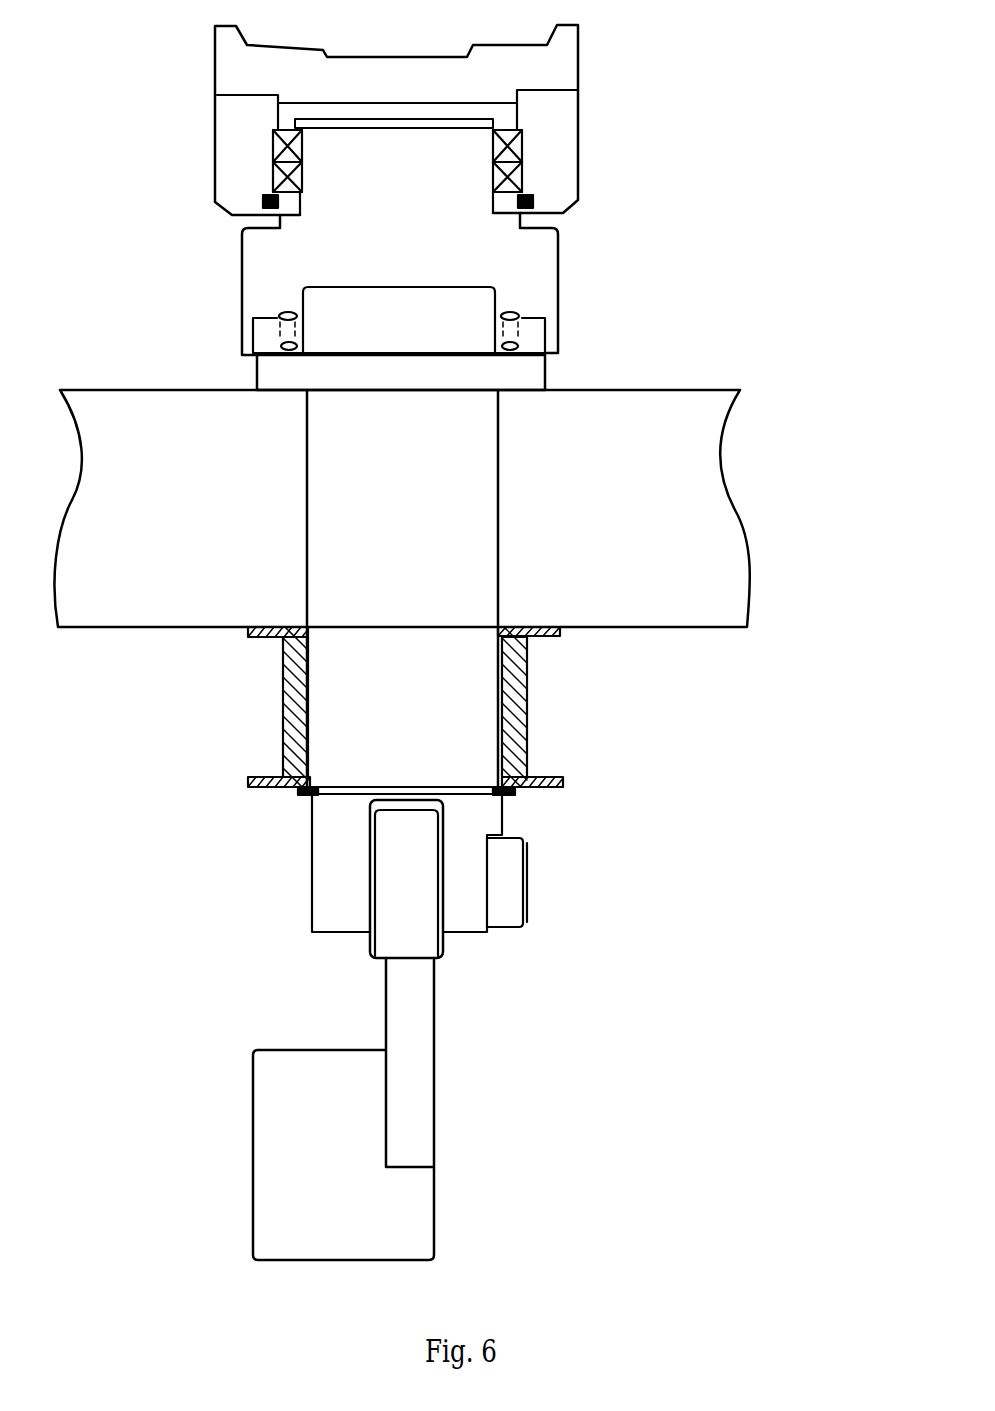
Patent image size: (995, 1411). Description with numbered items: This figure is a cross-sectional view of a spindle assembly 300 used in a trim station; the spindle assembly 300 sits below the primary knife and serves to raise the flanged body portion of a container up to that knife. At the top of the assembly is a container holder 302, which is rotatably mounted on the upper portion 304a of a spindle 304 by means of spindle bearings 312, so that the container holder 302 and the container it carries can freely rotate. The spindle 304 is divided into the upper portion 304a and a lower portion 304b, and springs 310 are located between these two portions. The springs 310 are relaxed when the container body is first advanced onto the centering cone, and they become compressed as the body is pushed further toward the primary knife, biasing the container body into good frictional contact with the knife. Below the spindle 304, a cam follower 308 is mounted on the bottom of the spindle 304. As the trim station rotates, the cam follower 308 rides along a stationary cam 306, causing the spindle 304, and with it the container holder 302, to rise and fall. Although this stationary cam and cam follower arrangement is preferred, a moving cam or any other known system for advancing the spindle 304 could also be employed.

The spindle assembly 300 is at (870, 260).
The container holder 302 is at (580, 60).
The spindle 304 is at (430, 510).
The upper portion 304a is at (537, 263).
The lower portion 304b is at (525, 372).
The stationary cam 306 is at (435, 1063).
The cam follower 308 is at (447, 943).
The springs 310 is at (525, 328).
The spindle bearings 312 is at (525, 142).